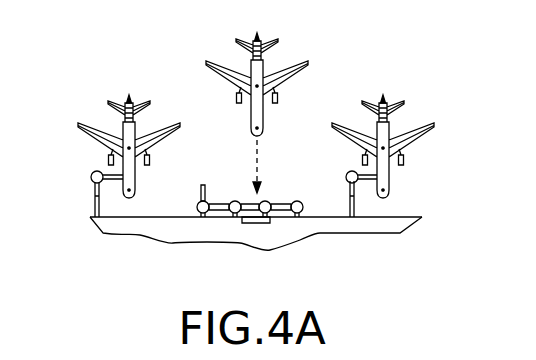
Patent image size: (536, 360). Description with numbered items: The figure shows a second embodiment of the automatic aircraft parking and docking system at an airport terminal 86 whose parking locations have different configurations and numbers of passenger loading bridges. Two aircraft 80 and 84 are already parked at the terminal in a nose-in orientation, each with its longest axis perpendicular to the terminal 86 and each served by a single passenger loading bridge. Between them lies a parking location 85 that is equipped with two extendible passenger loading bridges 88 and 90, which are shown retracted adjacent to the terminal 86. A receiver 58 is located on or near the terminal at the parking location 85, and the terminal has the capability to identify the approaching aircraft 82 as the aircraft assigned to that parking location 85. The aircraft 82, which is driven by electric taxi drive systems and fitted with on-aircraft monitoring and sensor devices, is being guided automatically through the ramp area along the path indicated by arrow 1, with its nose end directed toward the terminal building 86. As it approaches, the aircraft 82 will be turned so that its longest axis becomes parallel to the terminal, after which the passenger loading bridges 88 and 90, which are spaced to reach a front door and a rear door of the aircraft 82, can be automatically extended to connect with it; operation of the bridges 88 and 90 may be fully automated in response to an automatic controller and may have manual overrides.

The aircraft 80 is at (101, 121).
The aircraft 82 is at (233, 62).
The aircraft 84 is at (407, 122).
The parking location 85 is at (299, 233).
The airport terminal 86 is at (132, 218).
The extendible passenger loading bridge 88 is at (221, 200).
The extendible passenger loading bridge 90 is at (279, 200).
The receiver 58 is at (255, 223).
The arrow 1 is at (247, 166).